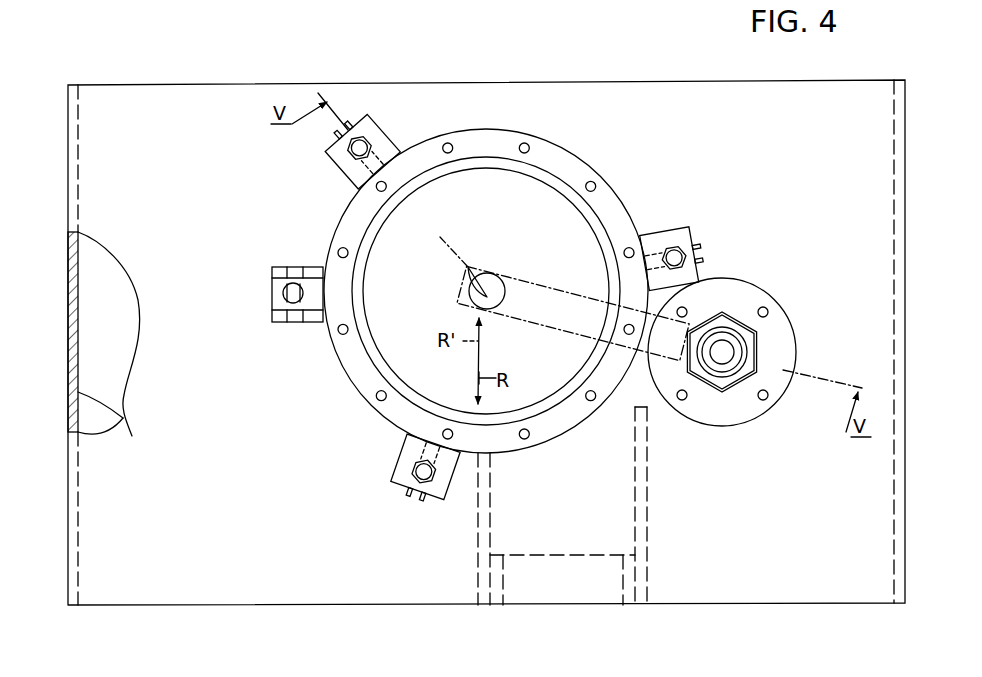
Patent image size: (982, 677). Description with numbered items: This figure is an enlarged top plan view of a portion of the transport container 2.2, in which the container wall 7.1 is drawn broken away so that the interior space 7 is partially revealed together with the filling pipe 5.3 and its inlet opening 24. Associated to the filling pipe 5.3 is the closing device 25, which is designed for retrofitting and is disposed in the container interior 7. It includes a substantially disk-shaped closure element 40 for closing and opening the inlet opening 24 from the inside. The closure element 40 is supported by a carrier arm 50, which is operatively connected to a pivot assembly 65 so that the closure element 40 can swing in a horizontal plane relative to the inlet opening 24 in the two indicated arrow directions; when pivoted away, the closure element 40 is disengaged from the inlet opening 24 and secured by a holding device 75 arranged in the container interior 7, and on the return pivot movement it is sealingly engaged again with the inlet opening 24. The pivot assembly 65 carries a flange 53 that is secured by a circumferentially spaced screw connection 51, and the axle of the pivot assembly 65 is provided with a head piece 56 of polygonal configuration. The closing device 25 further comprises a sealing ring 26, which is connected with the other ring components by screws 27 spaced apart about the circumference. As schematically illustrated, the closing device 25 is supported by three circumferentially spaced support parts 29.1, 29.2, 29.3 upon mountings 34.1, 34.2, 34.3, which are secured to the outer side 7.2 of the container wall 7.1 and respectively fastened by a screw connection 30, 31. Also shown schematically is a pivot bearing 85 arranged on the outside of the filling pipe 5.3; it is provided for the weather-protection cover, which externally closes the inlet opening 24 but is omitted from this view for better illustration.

The container 2.2 is at (522, 78).
The container interior 7 is at (115, 356).
The container wall 7.1 is at (126, 421).
The outer side of the container wall 7.2 is at (197, 531).
The inlet opening 24 is at (395, 244).
The closing device 25 is at (337, 374).
The sealing ring 26 is at (560, 162).
The screws 27 is at (528, 145).
The support part 29.1 is at (371, 117).
The support part 29.2 is at (713, 235).
The support part 29.3 is at (401, 495).
The screw connection 30 is at (408, 128).
The screw connection 31 is at (375, 142).
The mounting 34.1 is at (357, 118).
The mounting 34.2 is at (706, 252).
The mounting 34.3 is at (403, 503).
The closure element 40 is at (503, 226).
The carrier arm 50 is at (562, 300).
The screw connection 51 is at (768, 310).
The flange 53 is at (749, 384).
The head piece 56 is at (730, 392).
The pivot assembly 65 is at (715, 430).
The holding device 75 is at (652, 553).
The pivot bearing 85 is at (270, 321).
The filling pipe 5.3 is at (366, 418).